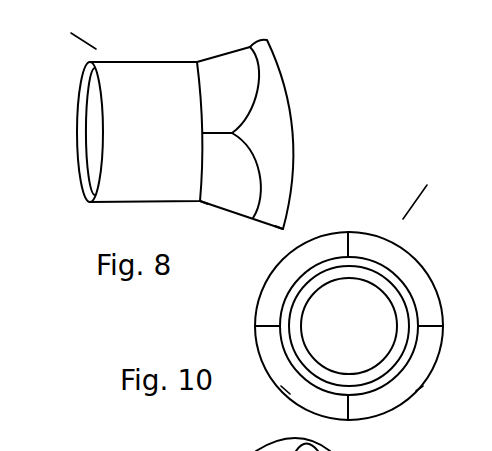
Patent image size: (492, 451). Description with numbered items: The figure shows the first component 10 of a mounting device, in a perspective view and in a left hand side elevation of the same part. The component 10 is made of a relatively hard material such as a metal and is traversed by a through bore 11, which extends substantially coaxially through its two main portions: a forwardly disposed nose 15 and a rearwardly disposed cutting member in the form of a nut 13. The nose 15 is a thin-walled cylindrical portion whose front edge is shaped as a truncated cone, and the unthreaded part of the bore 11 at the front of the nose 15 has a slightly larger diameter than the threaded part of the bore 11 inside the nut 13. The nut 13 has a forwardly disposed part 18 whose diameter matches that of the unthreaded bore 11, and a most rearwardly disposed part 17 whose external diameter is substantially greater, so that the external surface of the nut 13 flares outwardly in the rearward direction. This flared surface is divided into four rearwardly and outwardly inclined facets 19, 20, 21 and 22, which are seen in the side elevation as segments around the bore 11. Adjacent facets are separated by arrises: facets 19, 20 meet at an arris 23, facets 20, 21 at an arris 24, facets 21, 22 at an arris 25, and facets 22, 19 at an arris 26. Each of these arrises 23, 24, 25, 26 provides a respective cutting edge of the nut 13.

In FIG. 8, the first component 10 is at (103, 53).
In FIG. 10, the first component 10 is at (397, 228).
In FIG. 8, the through bore 11 is at (89, 133).
In FIG. 10, the through bore 11 is at (360, 338).
In FIG. 8, the nut 13 is at (232, 50).
In FIG. 8, the nose 15 is at (174, 72).
In FIG. 8, the most rearwardly disposed part 17 is at (283, 228).
In FIG. 10, the most rearwardly disposed part 17 is at (444, 292).
In FIG. 8, the forwardly disposed part 18 is at (201, 203).
In FIG. 8, the facet 19 is at (236, 78).
In FIG. 10, the facet 19 is at (378, 325).
In FIG. 8, the facet 20 is at (237, 163).
In FIG. 10, the facet 20 is at (413, 381).
In FIG. 10, the facet 21 is at (291, 381).
In FIG. 10, the facet 22 is at (281, 271).
In FIG. 10, the arris 23 is at (432, 328).
In FIG. 10, the arris 24 is at (349, 406).
In FIG. 10, the arris 25 is at (258, 328).
In FIG. 10, the arris 26 is at (350, 236).